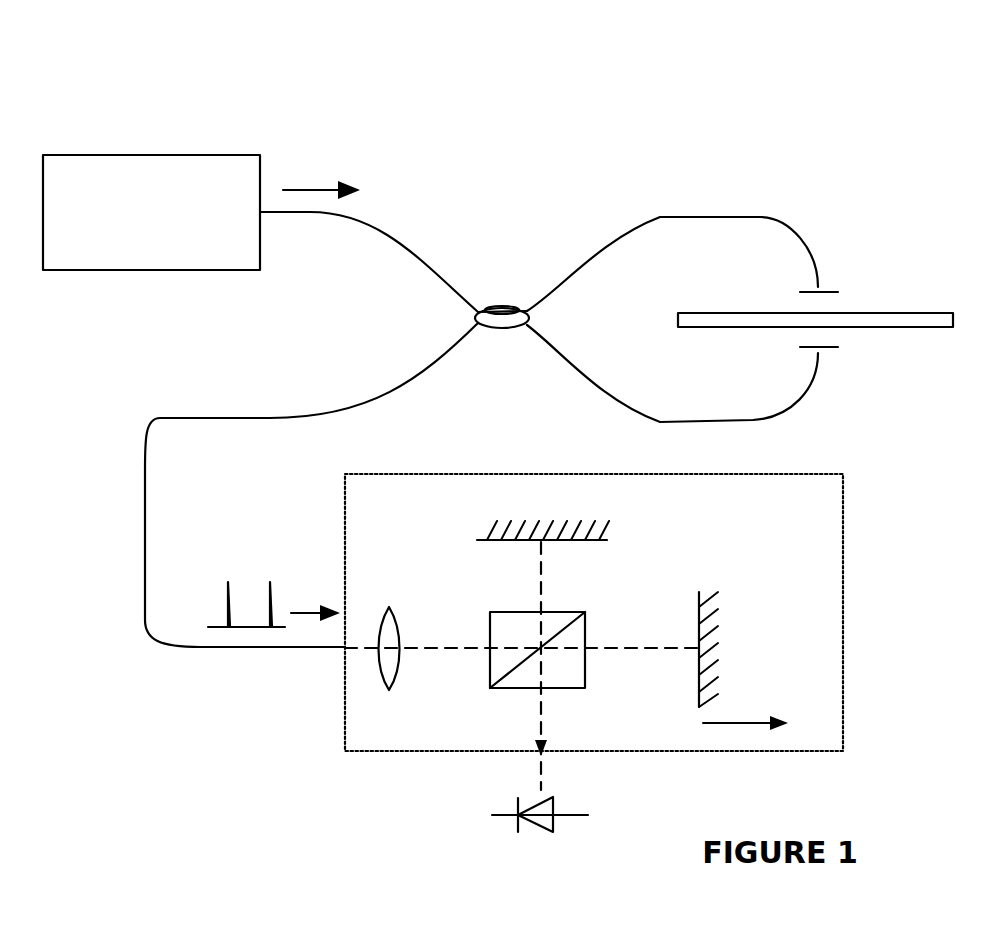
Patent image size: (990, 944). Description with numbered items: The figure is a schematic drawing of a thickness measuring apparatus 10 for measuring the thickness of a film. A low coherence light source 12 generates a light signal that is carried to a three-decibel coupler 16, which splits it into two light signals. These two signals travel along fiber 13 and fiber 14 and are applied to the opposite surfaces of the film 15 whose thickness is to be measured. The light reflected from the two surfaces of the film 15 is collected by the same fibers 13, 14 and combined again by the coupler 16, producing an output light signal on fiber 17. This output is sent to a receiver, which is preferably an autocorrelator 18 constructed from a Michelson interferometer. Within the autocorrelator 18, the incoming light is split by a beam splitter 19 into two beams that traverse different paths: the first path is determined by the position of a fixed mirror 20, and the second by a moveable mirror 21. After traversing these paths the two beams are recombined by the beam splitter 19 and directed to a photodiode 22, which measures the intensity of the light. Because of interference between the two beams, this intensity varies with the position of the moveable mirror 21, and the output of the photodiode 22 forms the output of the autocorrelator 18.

The thickness measuring apparatus 10 is at (156, 76).
The low coherence light source 12 is at (230, 270).
The fiber 13 is at (727, 217).
The fiber 14 is at (782, 412).
The film 15 is at (943, 313).
The 3 dB coupler 16 is at (502, 326).
The fiber 17 is at (276, 420).
The autocorrelator 18 is at (837, 535).
The beam splitter 19 is at (580, 679).
The fixed mirror 20 is at (583, 542).
The moveable mirror 21 is at (698, 605).
The photodiode 22 is at (548, 818).